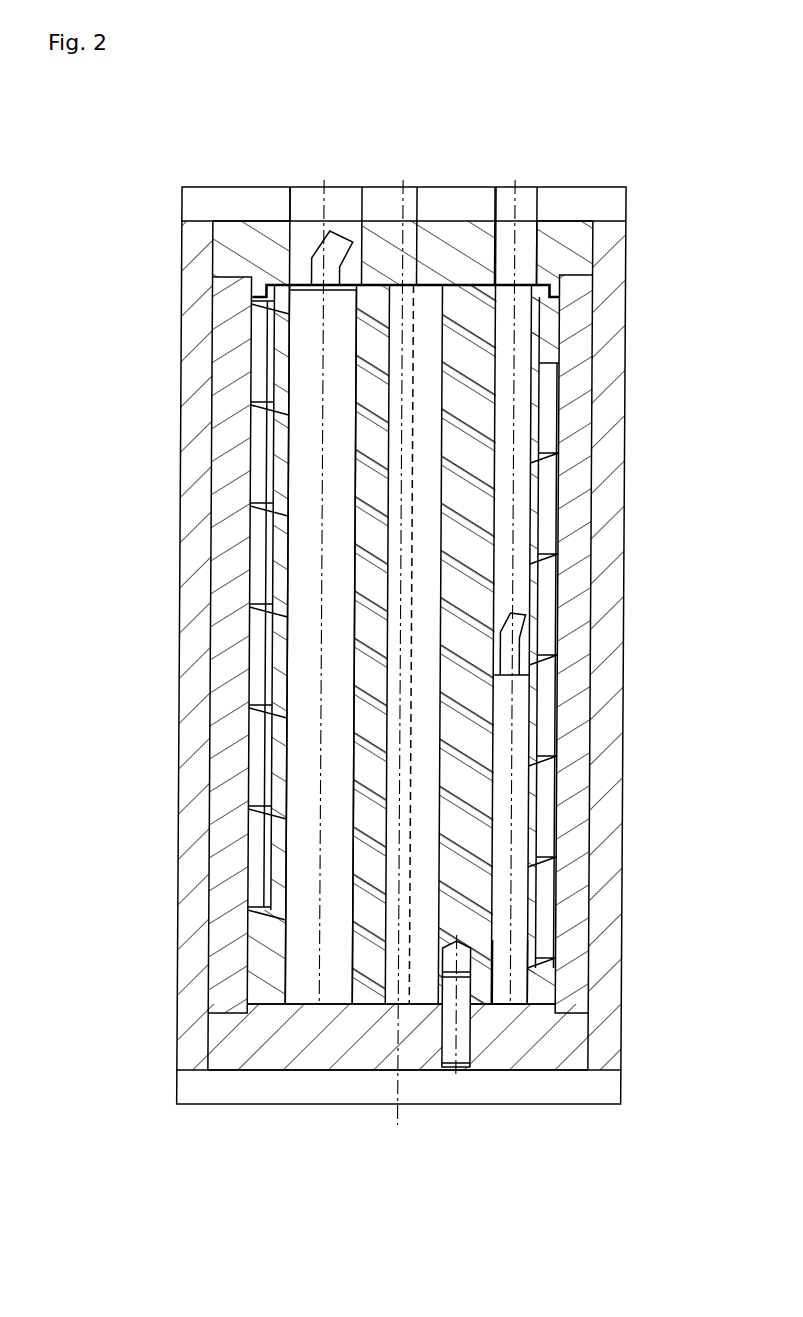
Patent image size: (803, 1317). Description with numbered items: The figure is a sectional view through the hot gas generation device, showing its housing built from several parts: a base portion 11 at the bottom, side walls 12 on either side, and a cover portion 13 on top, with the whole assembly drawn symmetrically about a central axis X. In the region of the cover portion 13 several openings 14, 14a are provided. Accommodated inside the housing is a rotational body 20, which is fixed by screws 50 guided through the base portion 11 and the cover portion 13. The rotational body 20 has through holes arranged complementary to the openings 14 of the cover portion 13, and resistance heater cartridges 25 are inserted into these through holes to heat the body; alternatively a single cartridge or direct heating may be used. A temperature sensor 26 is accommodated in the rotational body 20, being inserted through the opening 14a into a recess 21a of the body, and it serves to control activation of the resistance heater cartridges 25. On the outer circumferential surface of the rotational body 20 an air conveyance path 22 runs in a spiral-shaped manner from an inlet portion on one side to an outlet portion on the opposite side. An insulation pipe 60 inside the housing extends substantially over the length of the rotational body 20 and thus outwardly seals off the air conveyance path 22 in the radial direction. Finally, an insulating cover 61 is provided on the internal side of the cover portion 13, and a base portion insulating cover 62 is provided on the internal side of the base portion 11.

The base portion 11 is at (542, 1088).
The side walls 12 is at (600, 932).
The cover portion 13 is at (257, 203).
The openings 14 is at (352, 198).
The opening 14a is at (523, 207).
The rotational body 20 is at (475, 300).
The recess 21a is at (523, 377).
The air conveyance path 22 is at (180, 912).
The resistance heater cartridges 25 is at (340, 495).
The temperature sensor 26 is at (513, 970).
The screws 50 is at (455, 1083).
The insulation pipe 60 is at (225, 347).
The insulating cover 61 is at (227, 247).
The base portion insulating cover 62 is at (255, 1047).
The axis X is at (393, 1083).